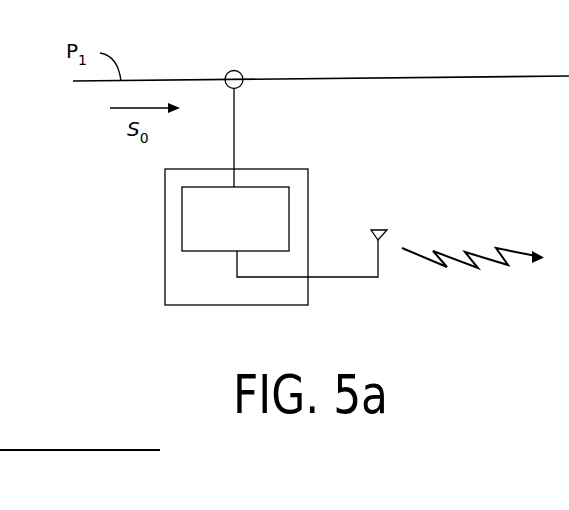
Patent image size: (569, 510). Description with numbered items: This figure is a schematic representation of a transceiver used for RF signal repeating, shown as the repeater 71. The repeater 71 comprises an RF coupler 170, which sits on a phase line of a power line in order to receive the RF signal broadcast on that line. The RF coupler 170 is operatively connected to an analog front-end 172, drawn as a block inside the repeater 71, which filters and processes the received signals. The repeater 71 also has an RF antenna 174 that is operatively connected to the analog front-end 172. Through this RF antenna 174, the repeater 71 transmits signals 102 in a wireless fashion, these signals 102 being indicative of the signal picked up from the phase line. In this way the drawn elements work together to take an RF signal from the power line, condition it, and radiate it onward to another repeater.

The RF coupler 170 is at (236, 70).
The repeater 71 is at (165, 236).
The analog front-end 172 is at (290, 213).
The RF antenna 174 is at (389, 230).
The signals 102 is at (478, 253).